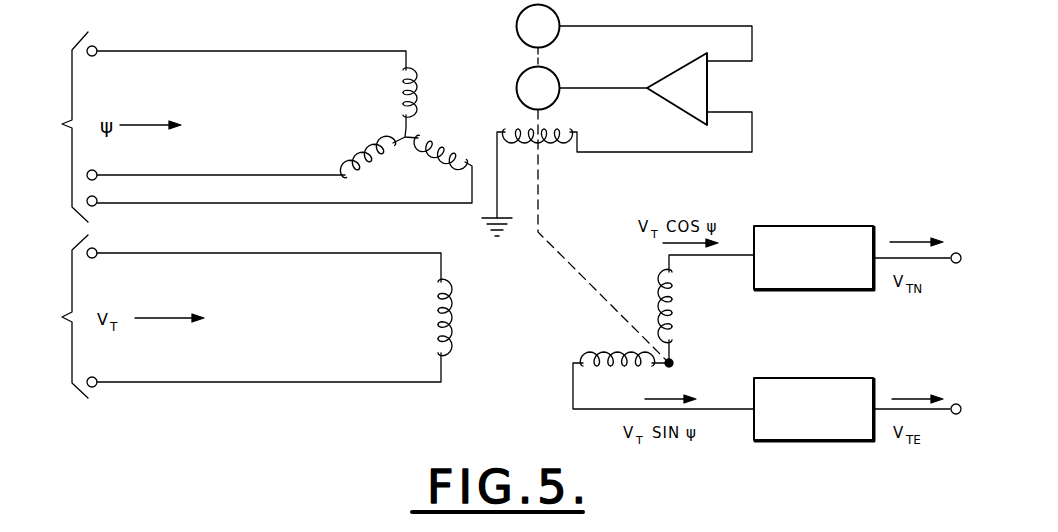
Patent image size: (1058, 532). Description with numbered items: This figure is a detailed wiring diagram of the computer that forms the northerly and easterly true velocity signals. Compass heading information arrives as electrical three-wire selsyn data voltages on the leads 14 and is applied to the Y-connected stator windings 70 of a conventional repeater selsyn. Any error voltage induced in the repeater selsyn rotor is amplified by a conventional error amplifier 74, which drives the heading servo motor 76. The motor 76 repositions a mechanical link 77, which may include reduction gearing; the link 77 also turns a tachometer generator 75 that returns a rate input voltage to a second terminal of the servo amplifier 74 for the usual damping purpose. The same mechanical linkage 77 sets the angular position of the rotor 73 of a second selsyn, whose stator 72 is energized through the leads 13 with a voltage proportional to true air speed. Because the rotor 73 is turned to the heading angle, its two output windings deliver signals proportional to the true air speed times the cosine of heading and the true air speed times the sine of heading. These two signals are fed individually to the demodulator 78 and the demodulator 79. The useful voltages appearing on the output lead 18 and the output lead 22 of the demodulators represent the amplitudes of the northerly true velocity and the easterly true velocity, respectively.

The leads 13 is at (63, 316).
The leads 14 is at (62, 127).
The output lead 18 is at (955, 252).
The output lead 22 is at (955, 403).
The stator windings 70 is at (398, 112).
The stator 72 is at (434, 340).
The rotor 73 is at (672, 362).
The error amplifier 74 is at (672, 72).
The tachometer generator 75 is at (519, 22).
The heading servo motor 76 is at (518, 82).
The mechanical link 77 is at (540, 206).
The demodulator 78 is at (806, 226).
The demodulator 79 is at (811, 378).